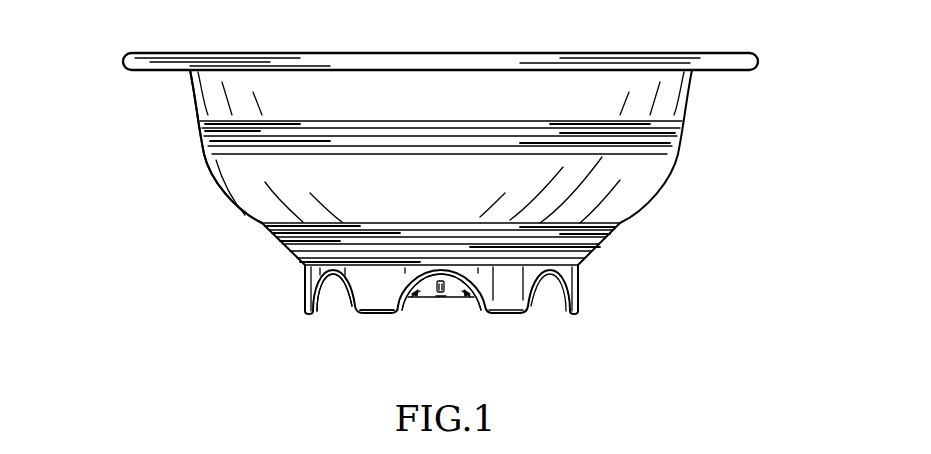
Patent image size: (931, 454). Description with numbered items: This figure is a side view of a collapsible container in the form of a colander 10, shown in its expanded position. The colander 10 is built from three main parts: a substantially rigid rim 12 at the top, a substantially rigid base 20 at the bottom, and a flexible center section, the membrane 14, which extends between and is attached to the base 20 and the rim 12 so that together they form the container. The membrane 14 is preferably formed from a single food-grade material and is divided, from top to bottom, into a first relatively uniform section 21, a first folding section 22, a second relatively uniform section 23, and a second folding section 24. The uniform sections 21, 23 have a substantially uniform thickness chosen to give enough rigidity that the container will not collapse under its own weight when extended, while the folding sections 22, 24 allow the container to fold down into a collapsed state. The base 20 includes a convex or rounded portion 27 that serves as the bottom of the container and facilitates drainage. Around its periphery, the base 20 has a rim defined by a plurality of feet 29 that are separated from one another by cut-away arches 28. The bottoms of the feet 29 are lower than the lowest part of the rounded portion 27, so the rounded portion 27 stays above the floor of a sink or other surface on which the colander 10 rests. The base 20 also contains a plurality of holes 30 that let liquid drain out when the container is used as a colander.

The colander 10 is at (170, 246).
The rim 12 is at (748, 56).
The membrane 14 is at (446, 196).
The base 20 is at (580, 283).
The first relatively uniform section 21 is at (190, 90).
The first folding section 22 is at (202, 135).
The second relatively uniform section 23 is at (230, 190).
The second folding section 24 is at (287, 248).
The rounded portion 27 is at (455, 290).
The cut-away arches 28 is at (338, 315).
The feet 29 is at (376, 315).
The holes 30 is at (434, 306).